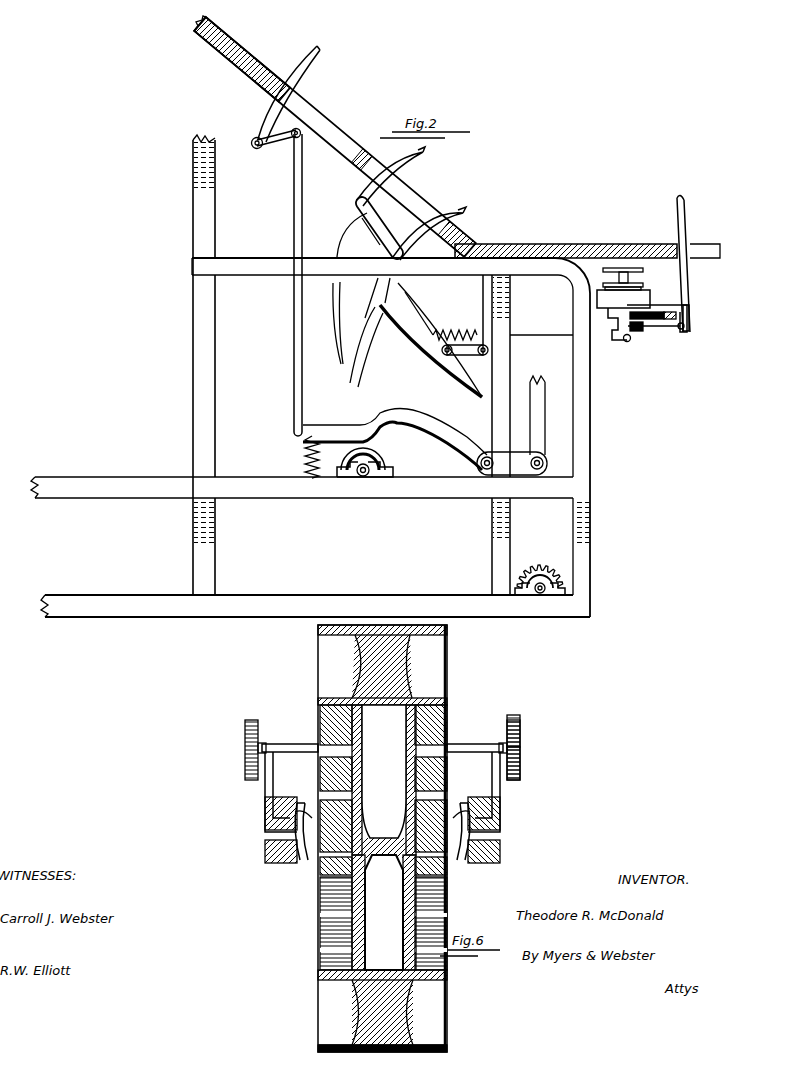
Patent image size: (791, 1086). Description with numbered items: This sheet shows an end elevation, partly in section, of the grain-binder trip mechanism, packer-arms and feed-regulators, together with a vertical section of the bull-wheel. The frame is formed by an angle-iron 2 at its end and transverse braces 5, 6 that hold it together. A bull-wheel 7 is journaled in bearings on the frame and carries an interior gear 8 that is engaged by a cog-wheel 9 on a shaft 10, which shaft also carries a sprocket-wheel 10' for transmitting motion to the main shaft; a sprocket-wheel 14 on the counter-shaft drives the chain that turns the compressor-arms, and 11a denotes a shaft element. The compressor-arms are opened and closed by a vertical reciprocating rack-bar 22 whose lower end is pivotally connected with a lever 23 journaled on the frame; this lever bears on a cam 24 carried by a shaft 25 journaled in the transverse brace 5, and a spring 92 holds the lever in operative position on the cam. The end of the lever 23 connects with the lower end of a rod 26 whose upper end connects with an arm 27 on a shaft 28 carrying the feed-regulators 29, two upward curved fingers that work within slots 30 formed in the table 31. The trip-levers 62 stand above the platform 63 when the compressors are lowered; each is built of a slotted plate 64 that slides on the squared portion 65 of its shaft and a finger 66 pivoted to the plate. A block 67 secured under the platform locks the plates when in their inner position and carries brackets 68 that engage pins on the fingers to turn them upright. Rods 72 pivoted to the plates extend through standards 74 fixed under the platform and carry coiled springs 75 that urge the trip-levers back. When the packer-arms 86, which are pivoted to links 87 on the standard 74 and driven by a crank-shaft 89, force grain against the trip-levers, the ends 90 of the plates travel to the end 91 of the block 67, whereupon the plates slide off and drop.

In FIG. 2, the angle-iron 2 is at (592, 406).
In FIG. 2, the transverse brace 5 is at (152, 477).
In FIG. 2, the transverse brace 6 is at (158, 597).
In FIG. 6, the bull-wheel 7 is at (448, 700).
In FIG. 6, the interior gear 8 is at (324, 935).
In FIG. 6, the cog-wheel 9 is at (322, 718).
In FIG. 6, the shaft 10 is at (528, 731).
In FIG. 6, the sprocket-wheel 10' is at (531, 764).
In FIG. 2, the shaft 11a is at (541, 595).
In FIG. 2, the sprocket-wheel 14 is at (562, 575).
In FIG. 2, the rack-bar 22 is at (538, 380).
In FIG. 2, the lever 23 is at (445, 430).
In FIG. 2, the cam 24 is at (388, 456).
In FIG. 2, the shaft 25 is at (363, 476).
In FIG. 2, the rod 26 is at (301, 320).
In FIG. 2, the arm 27 is at (278, 146).
In FIG. 2, the shaft 28 is at (253, 147).
In FIG. 2, the feed-regulators 29 is at (316, 80).
In FIG. 2, the slots 30 is at (330, 130).
In FIG. 2, the table 31 is at (255, 58).
In FIG. 2, the trip-levers 62 is at (690, 310).
In FIG. 2, the platform 63 is at (607, 244).
In FIG. 2, the slotted plates 64 is at (645, 330).
In FIG. 2, the squared portion 65 is at (682, 330).
In FIG. 2, the fingers 66 is at (690, 236).
In FIG. 2, the block 67 is at (623, 288).
In FIG. 2, the brackets 68 is at (690, 318).
In FIG. 2, the rods 72 is at (548, 335).
In FIG. 2, the standards 74 is at (483, 298).
In FIG. 2, the coiled springs 75 is at (447, 330).
In FIG. 2, the packer-arms 86 is at (350, 233).
In FIG. 2, the links 87 is at (468, 355).
In FIG. 2, the crank-shaft 89 is at (380, 238).
In FIG. 2, the ends of the plates 90 is at (616, 320).
In FIG. 2, the end of the block 91 is at (654, 304).
In FIG. 2, the spring 92 is at (305, 460).